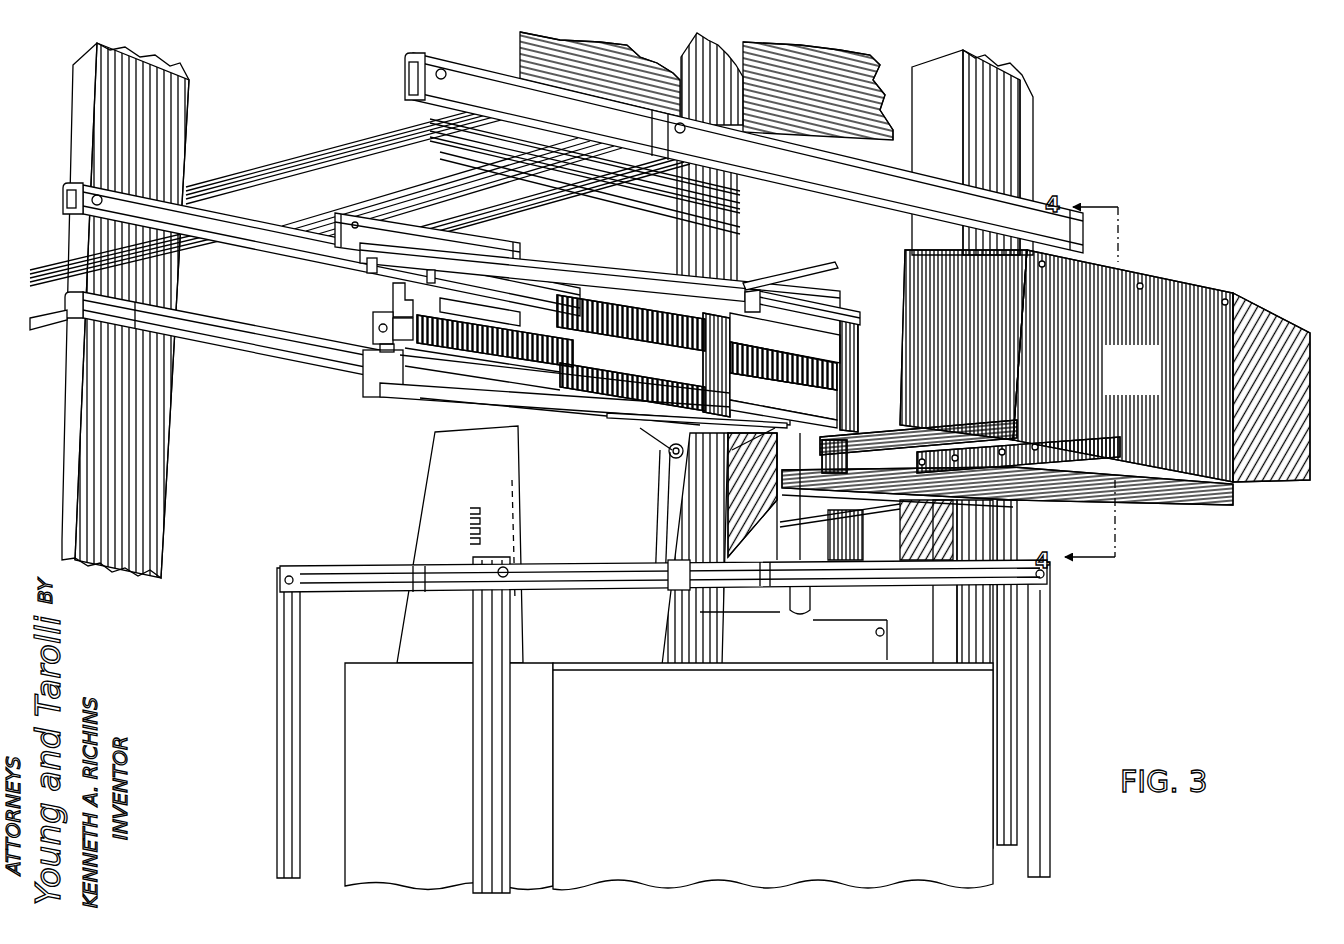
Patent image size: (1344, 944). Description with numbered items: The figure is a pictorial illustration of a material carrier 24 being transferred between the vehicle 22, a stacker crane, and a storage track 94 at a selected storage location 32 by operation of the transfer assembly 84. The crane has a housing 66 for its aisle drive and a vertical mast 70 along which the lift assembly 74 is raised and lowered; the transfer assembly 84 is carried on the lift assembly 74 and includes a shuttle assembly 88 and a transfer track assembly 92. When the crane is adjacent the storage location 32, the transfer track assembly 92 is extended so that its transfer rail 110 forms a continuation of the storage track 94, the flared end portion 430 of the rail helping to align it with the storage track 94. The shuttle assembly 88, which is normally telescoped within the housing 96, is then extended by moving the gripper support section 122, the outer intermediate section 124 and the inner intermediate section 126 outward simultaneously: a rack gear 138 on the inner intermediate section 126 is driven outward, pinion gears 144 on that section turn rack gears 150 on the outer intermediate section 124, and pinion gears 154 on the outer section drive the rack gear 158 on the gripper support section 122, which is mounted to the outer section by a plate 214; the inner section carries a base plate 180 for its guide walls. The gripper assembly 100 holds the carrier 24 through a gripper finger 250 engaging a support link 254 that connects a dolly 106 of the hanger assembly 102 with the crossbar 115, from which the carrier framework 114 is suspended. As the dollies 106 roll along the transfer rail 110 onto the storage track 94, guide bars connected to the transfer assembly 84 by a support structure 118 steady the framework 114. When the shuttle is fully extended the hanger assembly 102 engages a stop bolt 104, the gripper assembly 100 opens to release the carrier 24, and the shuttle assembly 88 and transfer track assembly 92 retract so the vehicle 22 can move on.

The vehicle 22 is at (425, 470).
The carrier 24 is at (1055, 644).
The storage location 32 is at (820, 102).
The housing 66 is at (440, 510).
The mast 70 is at (1005, 130).
The lift assembly 74 is at (1045, 402).
The transfer assembly 84 is at (1175, 290).
The shuttle assembly 88 is at (640, 300).
The transfer track assembly 92 is at (785, 268).
The storage track 94 is at (650, 110).
The housing 96 is at (1148, 384).
The gripper assembly 100 is at (372, 322).
The hanger assembly 102 is at (490, 410).
The stop bolt 104 is at (405, 86).
The dolly 106 is at (392, 300).
The transfer rail 110 is at (828, 300).
The carrier framework 114 is at (1048, 690).
The crossbar 115 is at (566, 408).
The support structure 118 is at (884, 634).
The gripper support section 122 is at (470, 262).
The outer intermediate section 124 is at (612, 400).
The inner intermediate section 126 is at (880, 338).
The rack gear 138 is at (838, 372).
The pinion gears 144 is at (733, 320).
The rack gears 150 is at (620, 338).
The pinion gears 154 is at (462, 320).
The rack gear 158 is at (470, 368).
The base plate 180 is at (832, 412).
The plate 214 is at (485, 385).
The gripper finger 250 is at (378, 335).
The support link 254 is at (385, 352).
The flared end portion 430 is at (748, 296).